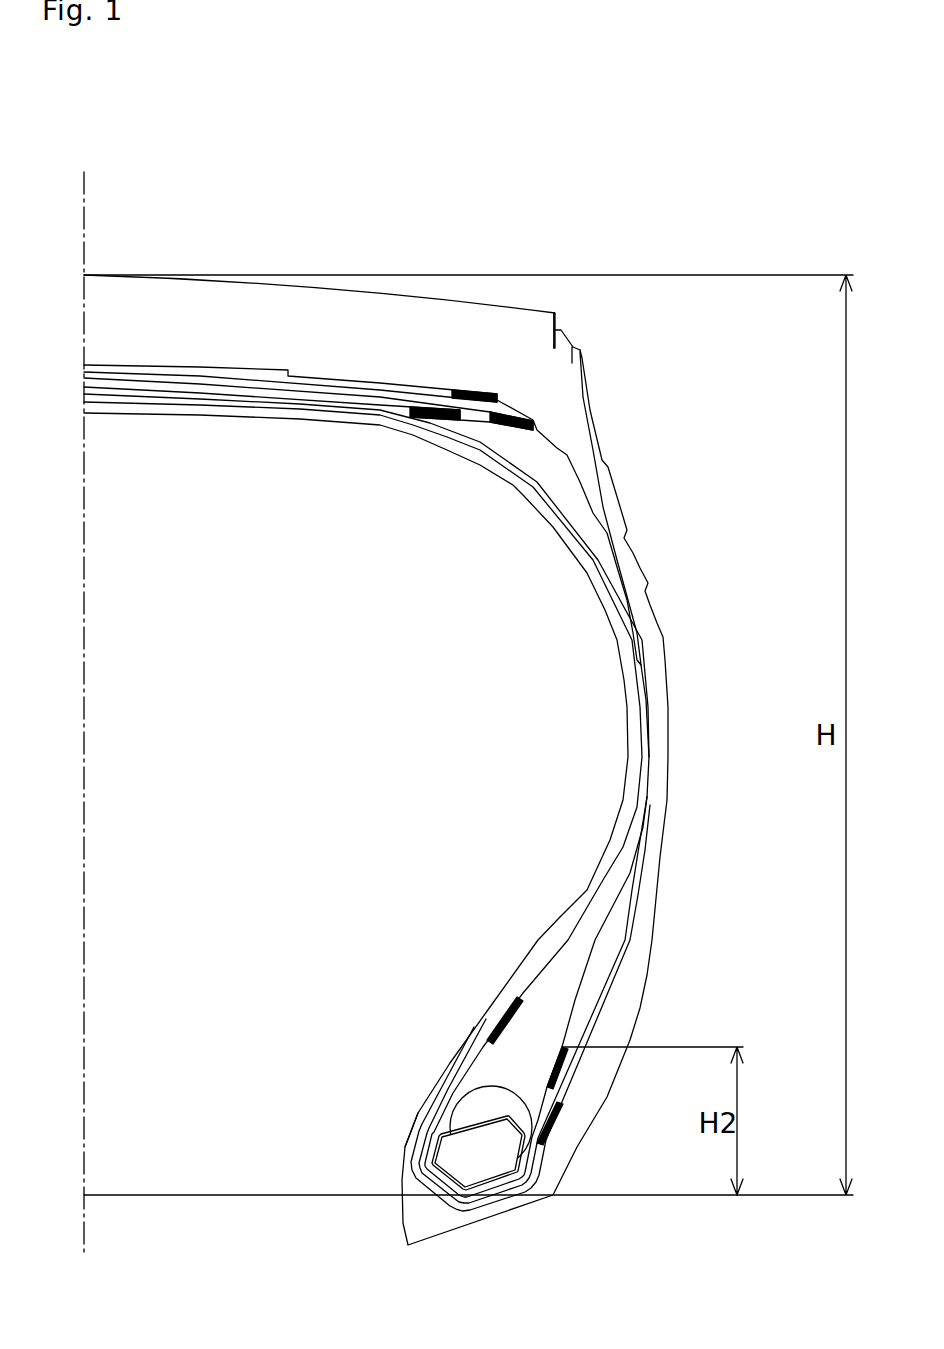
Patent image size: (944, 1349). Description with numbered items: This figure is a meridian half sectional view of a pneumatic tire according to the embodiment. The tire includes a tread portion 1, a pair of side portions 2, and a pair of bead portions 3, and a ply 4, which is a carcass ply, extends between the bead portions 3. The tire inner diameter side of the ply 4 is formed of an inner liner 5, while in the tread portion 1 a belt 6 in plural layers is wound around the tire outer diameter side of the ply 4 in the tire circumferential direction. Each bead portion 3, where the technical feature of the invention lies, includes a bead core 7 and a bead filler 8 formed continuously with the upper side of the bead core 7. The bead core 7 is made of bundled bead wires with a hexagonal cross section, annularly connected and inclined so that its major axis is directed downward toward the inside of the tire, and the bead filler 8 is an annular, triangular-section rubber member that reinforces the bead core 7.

The tread portion 1 is at (362, 310).
The side portion 2 is at (647, 610).
The bead portion 3 is at (638, 980).
The ply 4 is at (533, 487).
The inner liner 5 is at (425, 440).
The belt 6 is at (213, 383).
The bead core 7 is at (470, 1145).
The bead filler 8 is at (525, 1037).